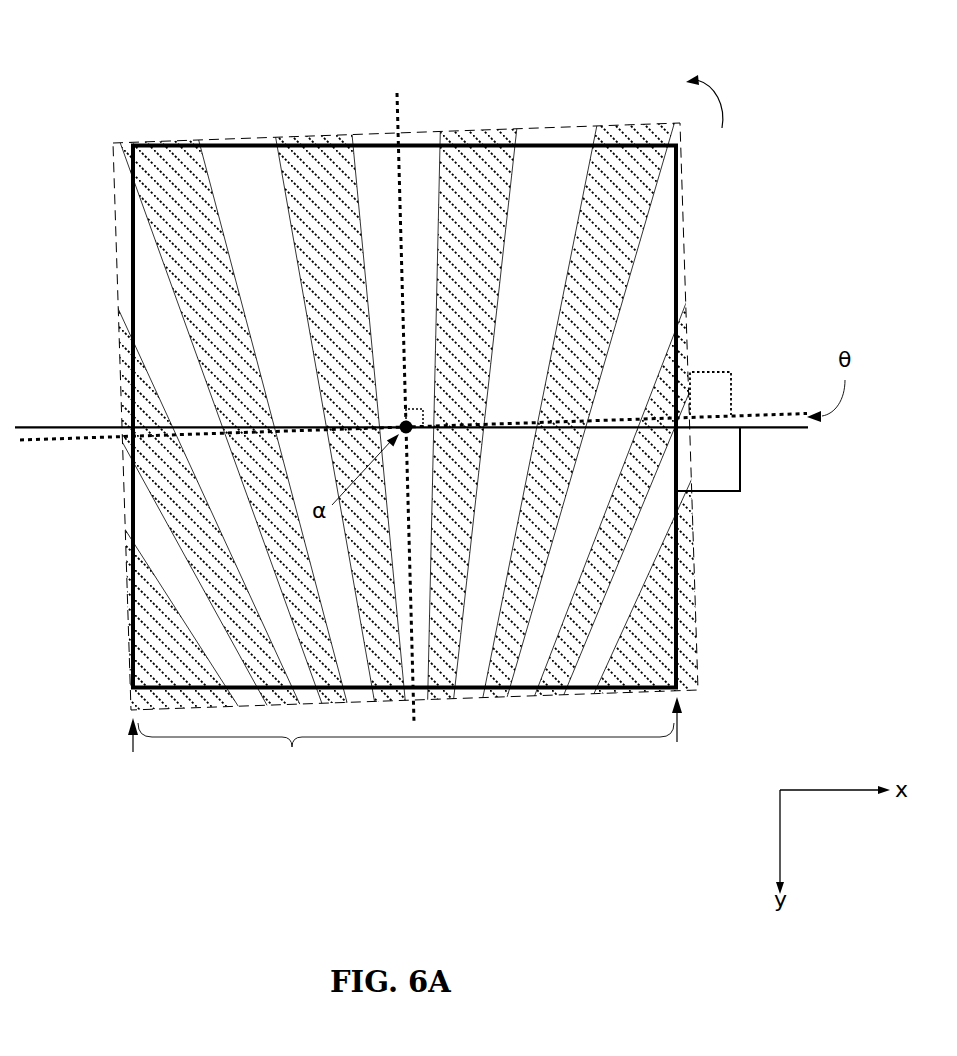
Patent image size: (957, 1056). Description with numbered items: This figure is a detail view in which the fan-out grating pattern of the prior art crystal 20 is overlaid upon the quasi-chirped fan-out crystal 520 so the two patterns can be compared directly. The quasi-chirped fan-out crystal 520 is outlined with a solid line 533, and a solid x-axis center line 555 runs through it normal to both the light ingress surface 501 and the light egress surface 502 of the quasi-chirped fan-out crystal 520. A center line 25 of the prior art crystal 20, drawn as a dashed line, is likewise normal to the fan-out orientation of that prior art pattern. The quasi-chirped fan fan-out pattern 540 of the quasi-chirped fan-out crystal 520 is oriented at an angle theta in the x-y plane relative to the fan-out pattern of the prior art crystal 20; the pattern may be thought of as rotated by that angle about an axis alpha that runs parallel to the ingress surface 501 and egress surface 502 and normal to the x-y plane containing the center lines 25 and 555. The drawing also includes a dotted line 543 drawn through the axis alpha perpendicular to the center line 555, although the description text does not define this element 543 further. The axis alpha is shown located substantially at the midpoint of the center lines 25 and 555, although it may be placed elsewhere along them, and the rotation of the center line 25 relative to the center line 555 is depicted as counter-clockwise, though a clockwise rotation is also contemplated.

The prior art crystal 20 is at (114, 206).
The quasi-chirped fan-out crystal 520 is at (131, 293).
The center line 555 is at (60, 437).
The center line 25 is at (66, 430).
The rotation axis 543 is at (399, 121).
The solid line 533 is at (678, 499).
The ingress surface 501 is at (134, 750).
The egress surface 502 is at (679, 734).
The quasi-chirped fan fan-out pattern 540 is at (406, 749).